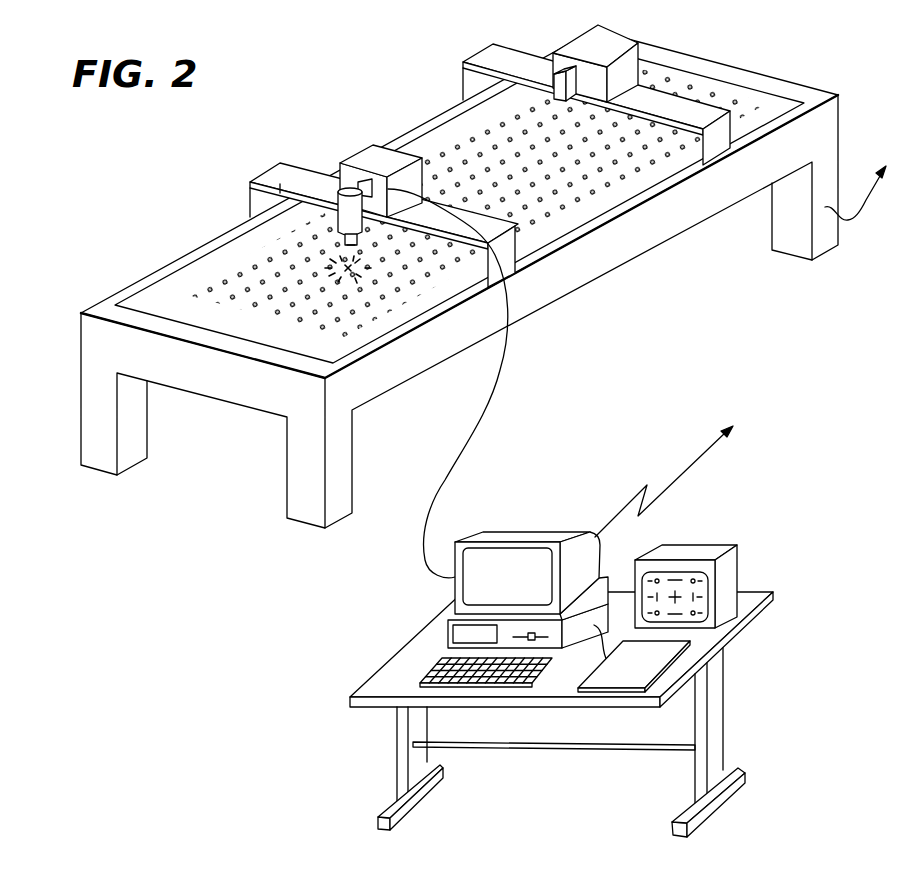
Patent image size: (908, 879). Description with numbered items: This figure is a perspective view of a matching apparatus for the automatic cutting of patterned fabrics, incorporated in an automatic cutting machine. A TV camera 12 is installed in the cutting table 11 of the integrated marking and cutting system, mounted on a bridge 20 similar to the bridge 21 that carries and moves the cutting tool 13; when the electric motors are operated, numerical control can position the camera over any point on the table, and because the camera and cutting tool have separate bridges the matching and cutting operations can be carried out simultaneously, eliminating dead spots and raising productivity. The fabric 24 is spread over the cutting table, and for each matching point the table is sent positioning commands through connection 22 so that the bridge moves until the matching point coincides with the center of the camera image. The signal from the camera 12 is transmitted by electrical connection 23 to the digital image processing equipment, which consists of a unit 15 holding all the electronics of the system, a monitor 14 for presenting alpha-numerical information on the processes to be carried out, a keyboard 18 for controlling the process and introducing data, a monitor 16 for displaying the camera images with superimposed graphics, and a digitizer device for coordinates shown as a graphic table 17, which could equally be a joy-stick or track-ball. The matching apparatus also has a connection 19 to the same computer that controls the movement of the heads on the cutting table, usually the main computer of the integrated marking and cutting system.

The cutting table 11 is at (583, 279).
The TV camera 12 is at (358, 228).
The cutting tool 13 is at (595, 63).
The monitor 14 is at (538, 532).
The unit 15 is at (450, 630).
The monitor 16 is at (734, 568).
The graphic table 17 is at (672, 648).
The keyboard 18 is at (436, 665).
The connection 19 is at (700, 456).
The bridge 20 is at (277, 168).
The bridge 21 is at (490, 46).
The connection 22 is at (857, 202).
The electrical connection 23 is at (449, 450).
The fabric spread over the cutting table 24 is at (261, 310).